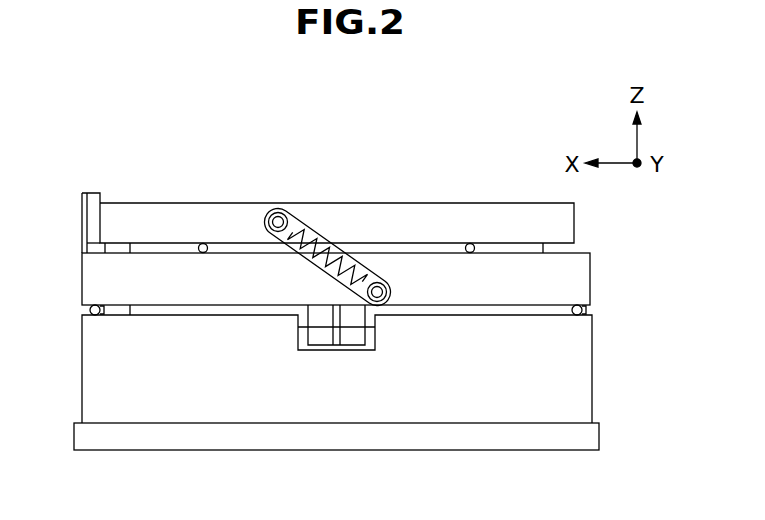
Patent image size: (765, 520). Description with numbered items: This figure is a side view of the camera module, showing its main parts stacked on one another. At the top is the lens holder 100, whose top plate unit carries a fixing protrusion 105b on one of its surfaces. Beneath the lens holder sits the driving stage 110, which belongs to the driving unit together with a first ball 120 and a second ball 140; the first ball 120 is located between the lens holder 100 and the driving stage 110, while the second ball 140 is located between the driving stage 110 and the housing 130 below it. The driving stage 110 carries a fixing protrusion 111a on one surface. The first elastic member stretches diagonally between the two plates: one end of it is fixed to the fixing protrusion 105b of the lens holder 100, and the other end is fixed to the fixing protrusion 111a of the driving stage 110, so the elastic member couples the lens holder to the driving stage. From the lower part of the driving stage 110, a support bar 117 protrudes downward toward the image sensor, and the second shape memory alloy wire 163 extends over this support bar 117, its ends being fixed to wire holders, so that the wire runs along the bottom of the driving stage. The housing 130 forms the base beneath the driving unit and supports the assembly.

The lens holder 100 is at (567, 223).
The driving stage 110 is at (583, 281).
The first ball 120 is at (203, 243).
The housing 130 is at (585, 371).
The second ball 140 is at (97, 316).
The fixing protrusion 105b is at (278, 209).
The fixing protrusion 111a is at (378, 279).
The second shape memory alloy wire 163 is at (303, 331).
The support bar 117 is at (352, 337).